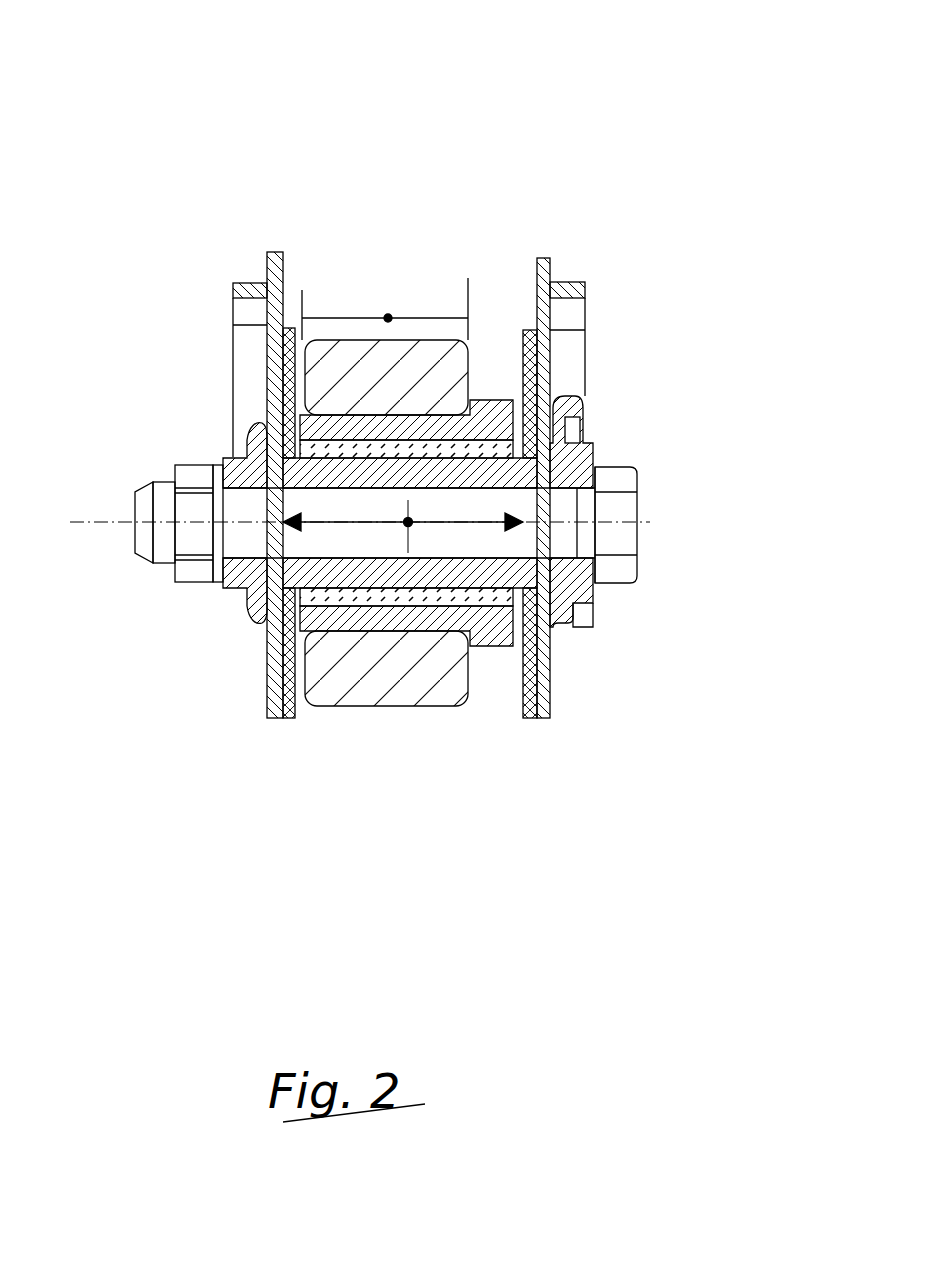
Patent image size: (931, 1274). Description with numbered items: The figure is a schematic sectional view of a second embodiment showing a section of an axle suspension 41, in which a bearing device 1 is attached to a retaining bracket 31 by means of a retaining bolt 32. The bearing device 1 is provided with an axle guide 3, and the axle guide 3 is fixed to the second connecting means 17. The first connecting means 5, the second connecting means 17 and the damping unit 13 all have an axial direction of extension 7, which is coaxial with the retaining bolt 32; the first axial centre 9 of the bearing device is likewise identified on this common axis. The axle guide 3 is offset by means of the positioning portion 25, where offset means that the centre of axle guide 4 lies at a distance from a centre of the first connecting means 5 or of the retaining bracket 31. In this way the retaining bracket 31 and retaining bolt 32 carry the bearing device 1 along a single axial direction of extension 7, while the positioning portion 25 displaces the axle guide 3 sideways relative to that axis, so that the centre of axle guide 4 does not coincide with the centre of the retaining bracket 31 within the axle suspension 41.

The bearing device 1 is at (497, 320).
The axle guide 3 is at (388, 315).
The centre of axle guide 4 is at (345, 353).
The first connecting means 5 is at (519, 595).
The axial direction of extension 7 is at (496, 528).
The first axial centre 9 is at (247, 615).
The damping unit 13 is at (545, 416).
The second connecting means 17 is at (487, 648).
The positioning portion 25 is at (488, 385).
The retaining bracket 31 is at (549, 264).
The retaining bolt 32 is at (227, 461).
The axle suspension 41 is at (243, 804).